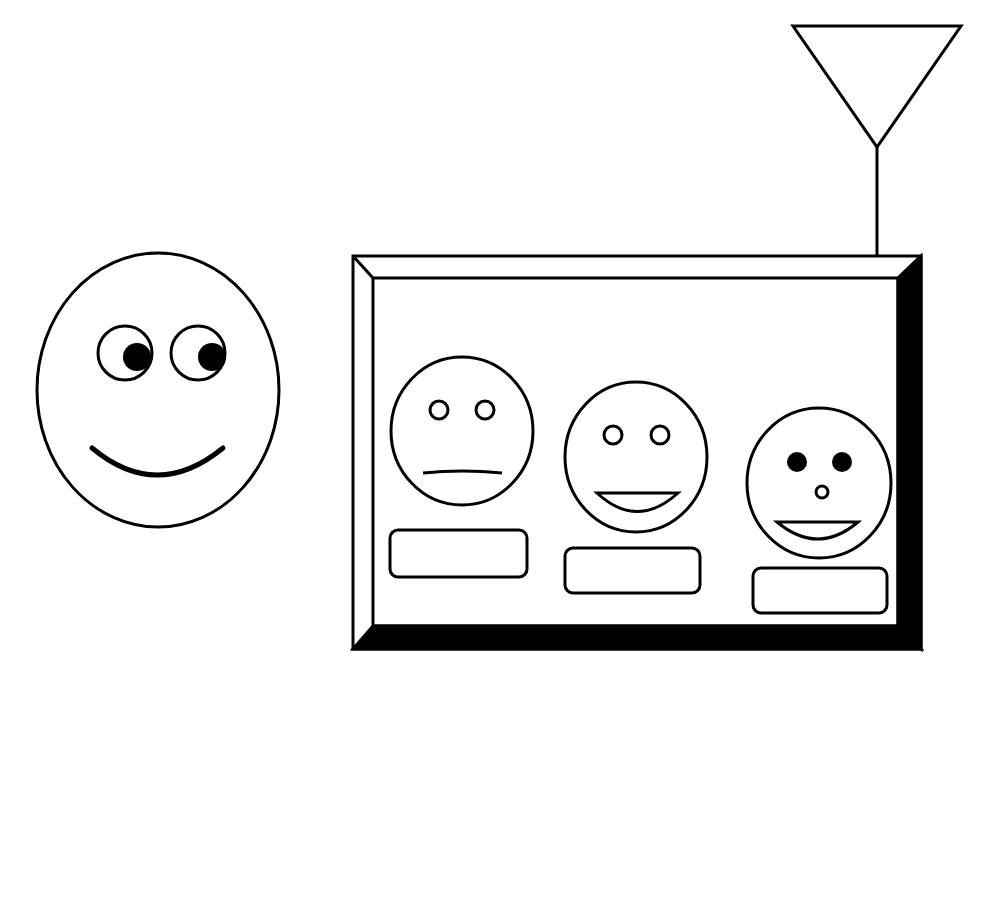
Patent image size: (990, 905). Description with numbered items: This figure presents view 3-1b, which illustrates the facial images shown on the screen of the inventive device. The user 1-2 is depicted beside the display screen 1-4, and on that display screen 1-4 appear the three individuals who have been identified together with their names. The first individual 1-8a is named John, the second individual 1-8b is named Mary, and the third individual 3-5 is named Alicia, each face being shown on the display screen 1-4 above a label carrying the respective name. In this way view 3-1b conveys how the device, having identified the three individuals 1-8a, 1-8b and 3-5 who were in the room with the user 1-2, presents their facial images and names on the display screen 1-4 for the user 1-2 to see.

The view 3-1b is at (222, 152).
The user 1-2 is at (138, 525).
The display screen 1-4 is at (417, 627).
The first individual 1-8a is at (488, 357).
The second individual 1-8b is at (647, 382).
The third individual 3-5 is at (818, 407).